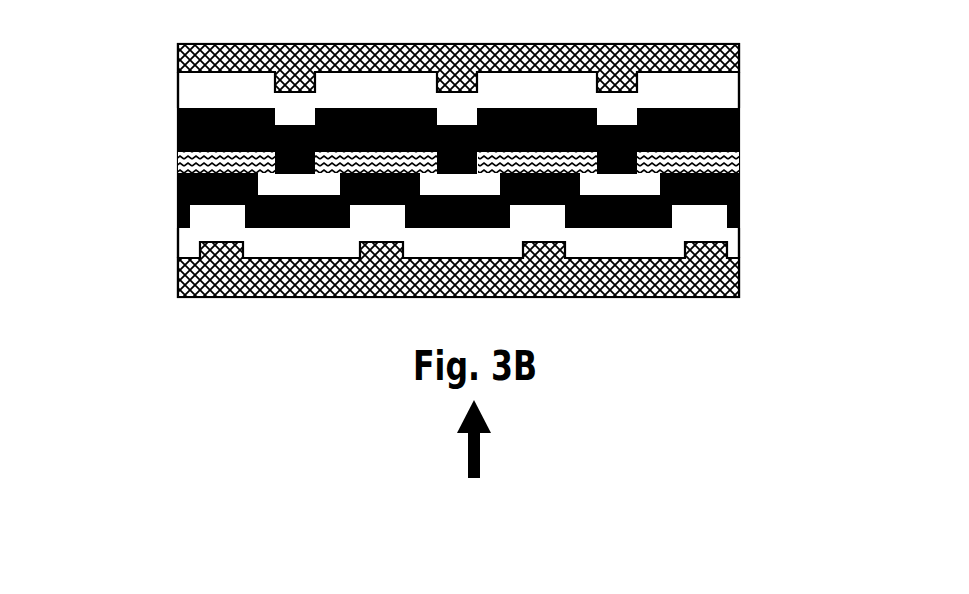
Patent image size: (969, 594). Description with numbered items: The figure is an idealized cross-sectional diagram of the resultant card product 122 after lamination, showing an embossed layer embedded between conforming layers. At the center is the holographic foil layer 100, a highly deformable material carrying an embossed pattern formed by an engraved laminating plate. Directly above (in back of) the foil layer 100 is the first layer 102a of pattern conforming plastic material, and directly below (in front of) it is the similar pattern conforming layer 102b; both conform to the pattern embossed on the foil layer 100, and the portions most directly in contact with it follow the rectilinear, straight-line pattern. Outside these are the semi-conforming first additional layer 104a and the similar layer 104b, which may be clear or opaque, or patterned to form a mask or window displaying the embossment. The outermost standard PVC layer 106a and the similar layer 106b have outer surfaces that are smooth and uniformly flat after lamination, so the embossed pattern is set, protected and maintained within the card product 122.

The foil layer 100 is at (739, 160).
The first layer 102a is at (178, 125).
The layer 102b is at (178, 181).
The first additional layer 104a is at (739, 77).
The layer 104b is at (739, 242).
The standard PVC layer 106a is at (178, 44).
The layer 106b is at (178, 270).
The card product 122 is at (231, 336).